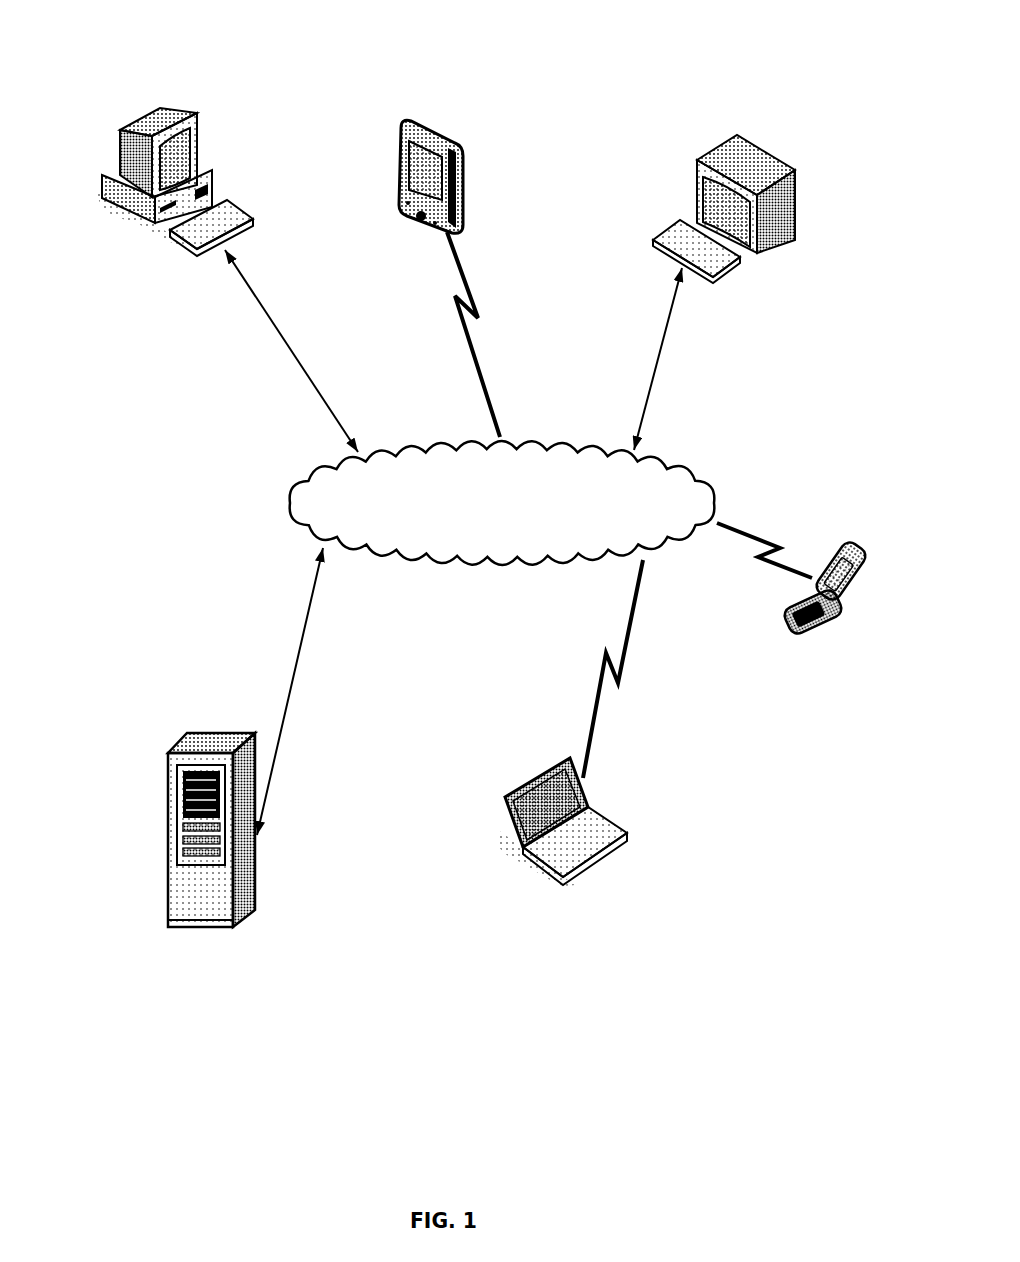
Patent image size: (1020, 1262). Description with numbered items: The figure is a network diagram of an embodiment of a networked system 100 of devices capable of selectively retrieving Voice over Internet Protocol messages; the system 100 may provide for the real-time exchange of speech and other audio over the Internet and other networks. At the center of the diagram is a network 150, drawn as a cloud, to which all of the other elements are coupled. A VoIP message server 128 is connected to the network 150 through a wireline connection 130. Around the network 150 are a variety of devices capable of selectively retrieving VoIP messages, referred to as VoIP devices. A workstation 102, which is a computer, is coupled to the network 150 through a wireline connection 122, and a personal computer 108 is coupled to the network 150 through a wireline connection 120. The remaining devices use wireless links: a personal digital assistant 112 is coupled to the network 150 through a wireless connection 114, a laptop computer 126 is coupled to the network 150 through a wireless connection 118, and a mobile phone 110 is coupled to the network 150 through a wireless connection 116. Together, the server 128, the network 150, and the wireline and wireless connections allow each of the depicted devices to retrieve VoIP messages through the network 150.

The networked system 100 is at (768, 59).
The workstation 102 is at (763, 156).
The personal computer 108 is at (195, 117).
The mobile phone 110 is at (840, 548).
The personal digital assistant 112 is at (444, 134).
The wireless connection 114 is at (488, 383).
The wireless connection 116 is at (753, 543).
The wireless connection 118 is at (625, 632).
The wireline connection 120 is at (303, 343).
The wireline connection 122 is at (657, 374).
The laptop computer 126 is at (610, 818).
The VoIP message server 128 is at (255, 862).
The wireline connection 130 is at (298, 652).
The network 150 is at (718, 477).